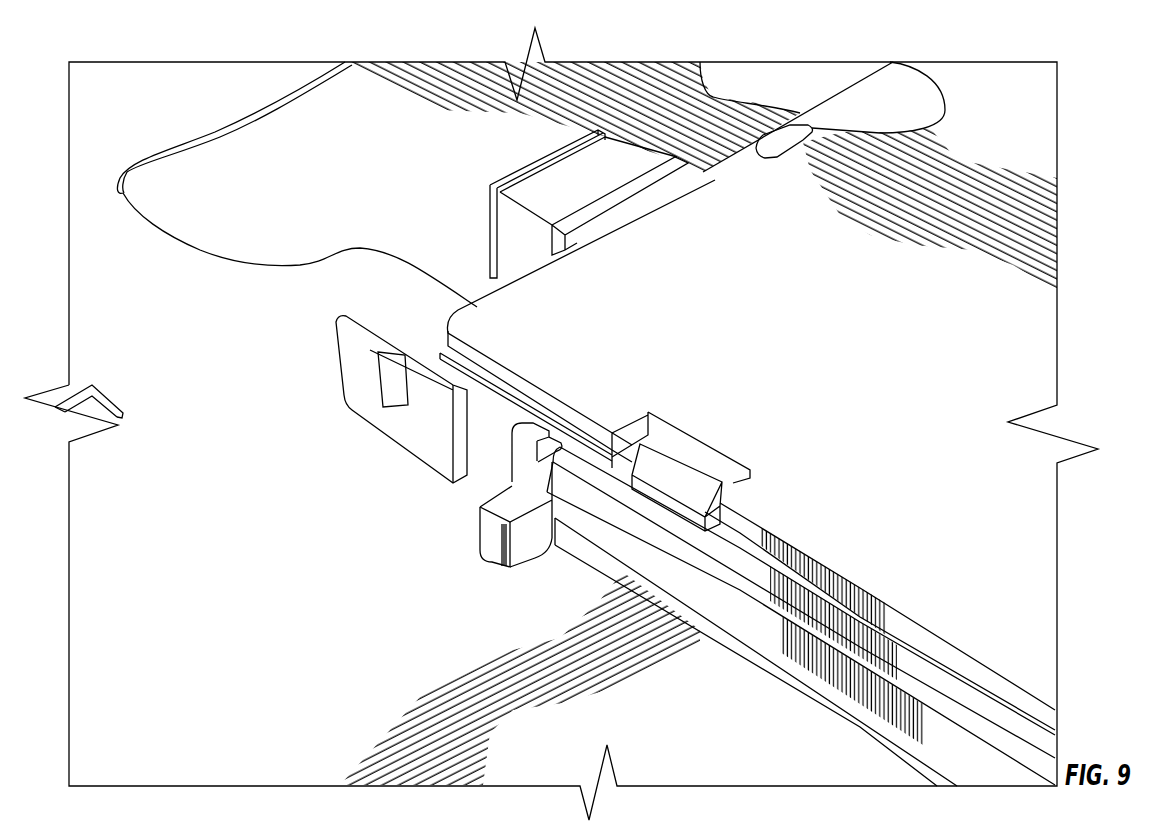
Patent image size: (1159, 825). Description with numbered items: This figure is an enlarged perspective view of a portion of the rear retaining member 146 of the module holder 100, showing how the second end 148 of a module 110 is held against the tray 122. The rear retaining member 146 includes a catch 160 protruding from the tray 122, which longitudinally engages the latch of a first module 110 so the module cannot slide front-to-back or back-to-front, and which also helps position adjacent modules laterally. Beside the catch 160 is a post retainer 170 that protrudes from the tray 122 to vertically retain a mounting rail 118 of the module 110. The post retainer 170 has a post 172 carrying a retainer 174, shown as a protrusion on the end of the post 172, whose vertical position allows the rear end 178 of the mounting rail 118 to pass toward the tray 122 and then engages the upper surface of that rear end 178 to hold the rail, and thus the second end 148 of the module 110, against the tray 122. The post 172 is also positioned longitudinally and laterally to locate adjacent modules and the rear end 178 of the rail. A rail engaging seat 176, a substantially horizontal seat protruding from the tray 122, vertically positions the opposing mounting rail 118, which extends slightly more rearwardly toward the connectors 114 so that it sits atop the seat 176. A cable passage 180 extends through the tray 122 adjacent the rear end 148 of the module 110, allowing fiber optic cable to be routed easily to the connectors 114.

The module holder 100 is at (157, 94).
The module 110 is at (914, 355).
The connector 114 is at (526, 136).
The mounting rail 118 is at (731, 605).
The tray 122 is at (249, 585).
The rear retaining member 146 is at (333, 404).
The second (rear) end 148 is at (748, 250).
The catch 160 is at (430, 400).
The post retainer 170 is at (480, 484).
The post 172 is at (520, 463).
The retainer 174 is at (560, 483).
The rail engaging seat 176 is at (505, 505).
The rear end 178 is at (612, 478).
The cable passage 180 is at (378, 168).